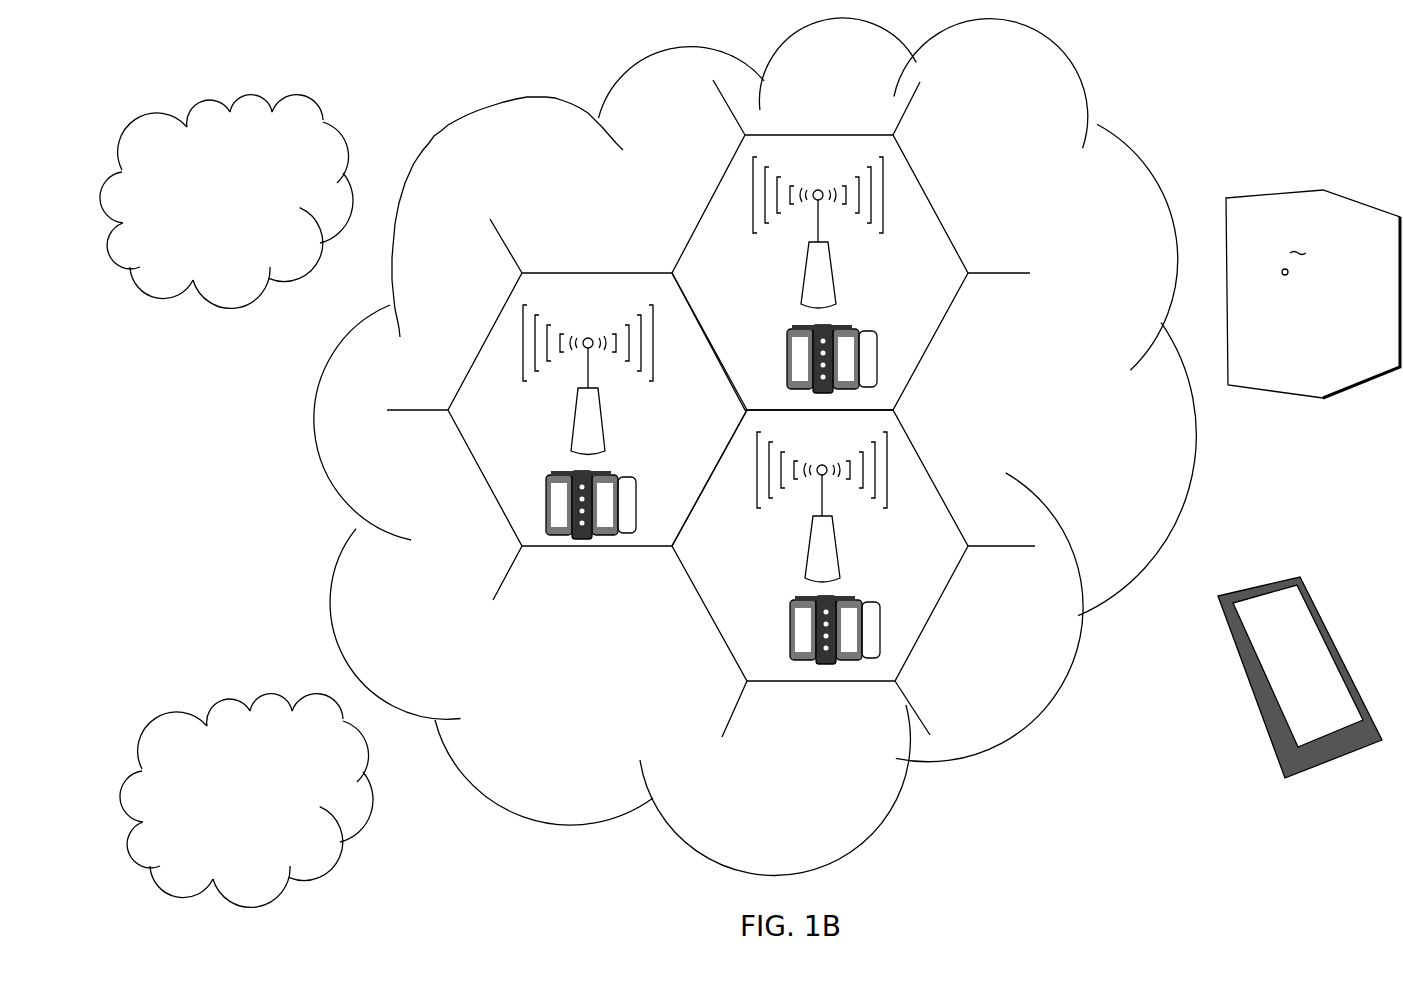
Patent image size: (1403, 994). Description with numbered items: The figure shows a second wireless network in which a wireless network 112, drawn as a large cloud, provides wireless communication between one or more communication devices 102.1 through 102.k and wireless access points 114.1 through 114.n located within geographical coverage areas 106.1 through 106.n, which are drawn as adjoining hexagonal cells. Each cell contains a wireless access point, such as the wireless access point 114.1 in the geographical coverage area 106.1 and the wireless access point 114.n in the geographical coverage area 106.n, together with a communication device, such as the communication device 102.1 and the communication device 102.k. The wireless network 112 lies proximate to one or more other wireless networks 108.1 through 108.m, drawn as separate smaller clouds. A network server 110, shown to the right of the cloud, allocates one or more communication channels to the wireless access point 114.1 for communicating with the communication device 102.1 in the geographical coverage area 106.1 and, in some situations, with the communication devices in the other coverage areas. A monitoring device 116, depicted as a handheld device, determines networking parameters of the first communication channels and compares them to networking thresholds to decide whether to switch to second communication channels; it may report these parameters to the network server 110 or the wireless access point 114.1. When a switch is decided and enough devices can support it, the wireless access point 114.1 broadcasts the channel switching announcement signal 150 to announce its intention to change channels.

The communication device 102.1 is at (892, 358).
The communication device 102.k is at (895, 626).
The geographical coverage area 106.1 is at (702, 214).
The geographical coverage area 106.n is at (834, 684).
The other wireless network 108.1 is at (323, 112).
The other wireless network 108.m is at (228, 703).
The network server 110 is at (1313, 188).
The wireless network 112 is at (1117, 141).
The wireless access point 114.1 is at (842, 250).
The wireless access point 114.n is at (845, 523).
The monitoring device 116 is at (1315, 593).
The channel switching announcement signal 150 is at (895, 200).